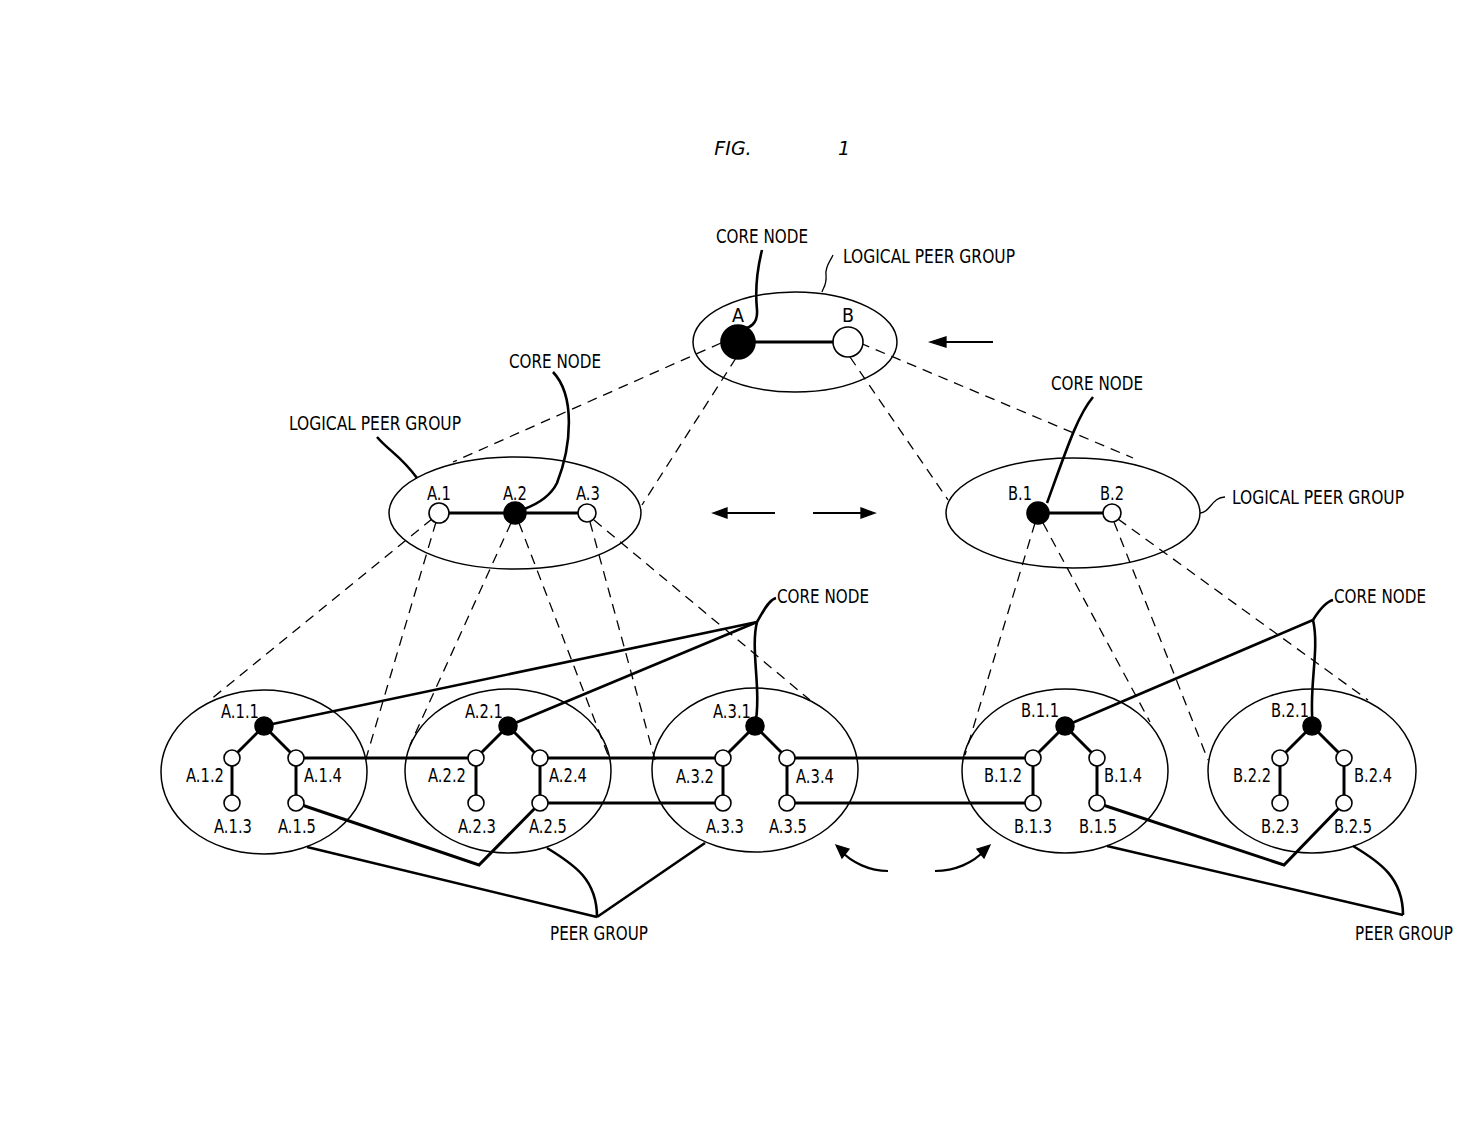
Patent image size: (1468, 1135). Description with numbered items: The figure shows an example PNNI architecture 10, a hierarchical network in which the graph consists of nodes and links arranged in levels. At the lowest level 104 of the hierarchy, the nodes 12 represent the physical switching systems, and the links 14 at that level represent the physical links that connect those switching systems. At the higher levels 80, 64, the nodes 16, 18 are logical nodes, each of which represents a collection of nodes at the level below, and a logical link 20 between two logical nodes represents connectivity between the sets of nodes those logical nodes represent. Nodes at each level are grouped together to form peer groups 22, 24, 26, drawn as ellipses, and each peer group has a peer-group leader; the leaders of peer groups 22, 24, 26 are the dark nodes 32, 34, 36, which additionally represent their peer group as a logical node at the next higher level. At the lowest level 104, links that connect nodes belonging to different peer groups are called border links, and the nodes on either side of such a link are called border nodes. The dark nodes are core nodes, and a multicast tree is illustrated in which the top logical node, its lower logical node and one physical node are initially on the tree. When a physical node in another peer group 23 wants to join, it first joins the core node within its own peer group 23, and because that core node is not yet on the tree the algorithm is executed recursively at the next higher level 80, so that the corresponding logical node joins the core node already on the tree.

The PNNI architecture 10 is at (787, 200).
The peer group 26 is at (706, 312).
The logical node 18 is at (836, 333).
The peer-group leader 36 is at (753, 356).
The higher level 64 is at (975, 345).
The peer group 24 is at (390, 512).
The logical link 20 is at (470, 512).
The peer-group leader 34 is at (514, 524).
The logical node 16 is at (580, 520).
The higher level 80 is at (794, 511).
The peer group 22 is at (302, 694).
The peer group 23 is at (704, 698).
The link 14 is at (289, 744).
The peer-group leader 32 is at (265, 736).
The node 12 is at (241, 805).
The lowest level 104 is at (913, 863).